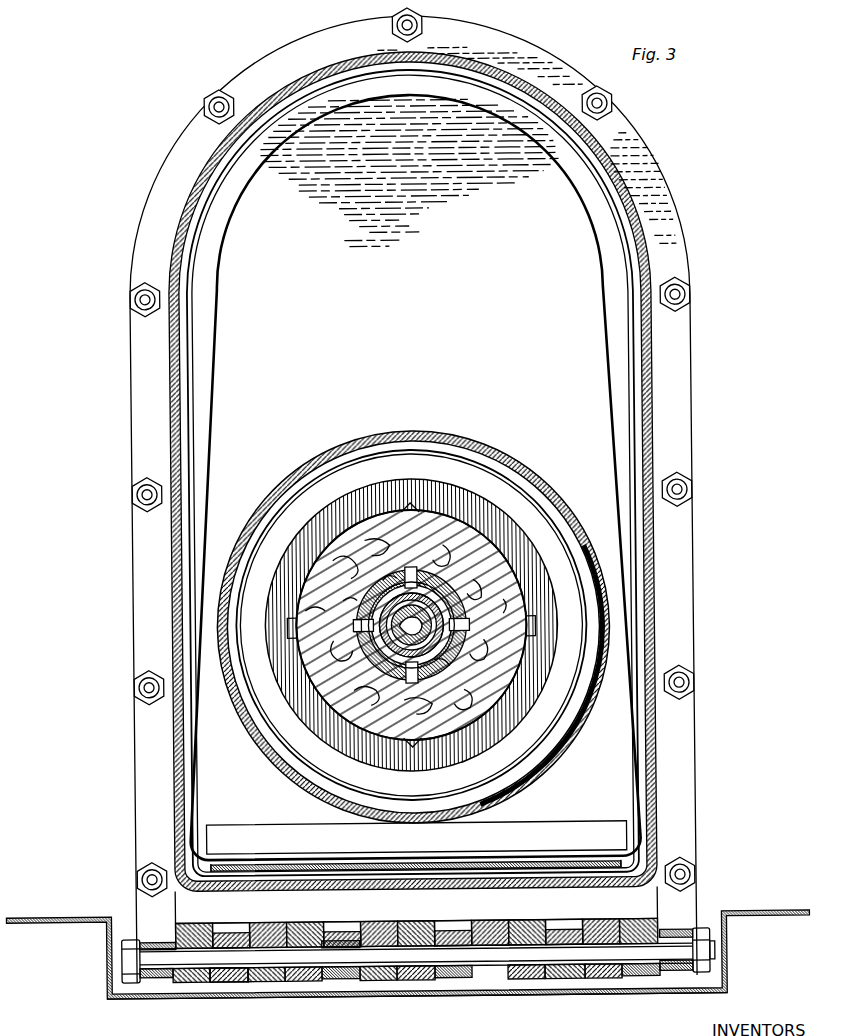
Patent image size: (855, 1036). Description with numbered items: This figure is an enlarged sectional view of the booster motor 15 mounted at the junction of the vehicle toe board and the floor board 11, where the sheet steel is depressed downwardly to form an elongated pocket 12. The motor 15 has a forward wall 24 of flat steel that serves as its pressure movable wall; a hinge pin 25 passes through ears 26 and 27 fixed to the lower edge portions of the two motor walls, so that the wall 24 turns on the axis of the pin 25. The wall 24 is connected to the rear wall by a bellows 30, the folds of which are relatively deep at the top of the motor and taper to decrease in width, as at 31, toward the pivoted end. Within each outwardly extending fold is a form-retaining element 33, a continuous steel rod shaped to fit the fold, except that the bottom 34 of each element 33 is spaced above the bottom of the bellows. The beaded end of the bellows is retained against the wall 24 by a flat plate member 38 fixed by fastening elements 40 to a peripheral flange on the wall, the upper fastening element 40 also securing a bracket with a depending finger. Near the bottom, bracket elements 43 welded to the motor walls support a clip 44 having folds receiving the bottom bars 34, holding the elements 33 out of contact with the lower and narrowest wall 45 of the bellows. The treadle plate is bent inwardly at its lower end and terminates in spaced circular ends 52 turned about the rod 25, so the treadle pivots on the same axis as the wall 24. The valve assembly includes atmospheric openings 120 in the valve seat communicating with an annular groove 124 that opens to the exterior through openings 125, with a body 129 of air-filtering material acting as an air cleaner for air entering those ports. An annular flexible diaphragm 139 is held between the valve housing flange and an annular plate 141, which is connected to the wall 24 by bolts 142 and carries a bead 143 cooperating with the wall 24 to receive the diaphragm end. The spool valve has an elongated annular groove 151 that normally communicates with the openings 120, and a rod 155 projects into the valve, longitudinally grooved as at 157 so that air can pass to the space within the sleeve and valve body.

The floor board 11 is at (86, 914).
The elongated pocket 12 is at (121, 988).
The motor 15 is at (269, 44).
The forward wall 24 is at (420, 354).
The hinge pin 25 is at (390, 962).
The ear 26 is at (234, 980).
The ear 27 is at (574, 898).
The bellows 30 is at (346, 64).
The tapered bellows folds 31 is at (212, 396).
The form-retaining element 33 is at (190, 285).
The bottom bar 34 is at (304, 856).
The flat plate member 38 is at (544, 57).
The fastening element 40 is at (428, 29).
The bracket element 43 is at (238, 870).
The clip 44 is at (261, 824).
The lower wall of the bellows 45 is at (503, 873).
The circular ends 52 is at (169, 978).
The atmospheric openings 120 is at (390, 604).
The annular groove 124 is at (436, 596).
The openings 125 is at (409, 568).
The body of air-filtering material 129 is at (481, 547).
The annular flexible diaphragm 139 is at (469, 439).
The annular plate 141 is at (447, 488).
The bolts 142 is at (406, 504).
The bead 143 is at (317, 497).
The elongated annular groove 151 is at (444, 647).
The rod 155 is at (367, 643).
The longitudinal grooves 157 is at (442, 626).